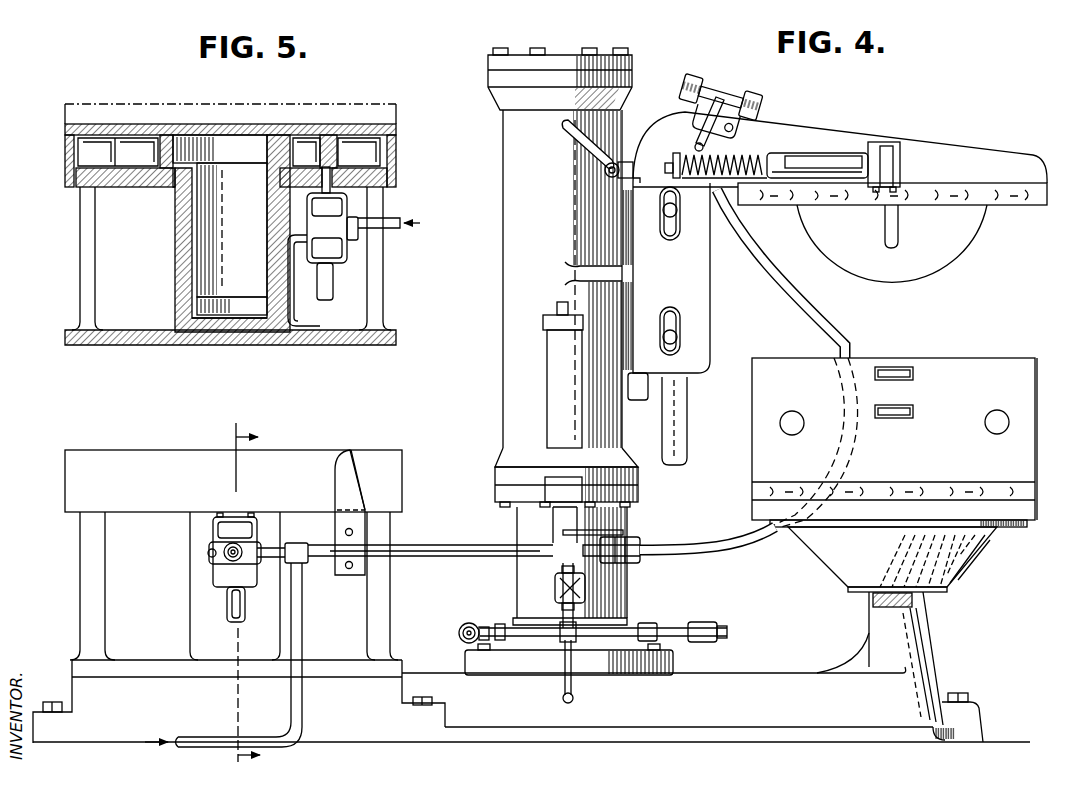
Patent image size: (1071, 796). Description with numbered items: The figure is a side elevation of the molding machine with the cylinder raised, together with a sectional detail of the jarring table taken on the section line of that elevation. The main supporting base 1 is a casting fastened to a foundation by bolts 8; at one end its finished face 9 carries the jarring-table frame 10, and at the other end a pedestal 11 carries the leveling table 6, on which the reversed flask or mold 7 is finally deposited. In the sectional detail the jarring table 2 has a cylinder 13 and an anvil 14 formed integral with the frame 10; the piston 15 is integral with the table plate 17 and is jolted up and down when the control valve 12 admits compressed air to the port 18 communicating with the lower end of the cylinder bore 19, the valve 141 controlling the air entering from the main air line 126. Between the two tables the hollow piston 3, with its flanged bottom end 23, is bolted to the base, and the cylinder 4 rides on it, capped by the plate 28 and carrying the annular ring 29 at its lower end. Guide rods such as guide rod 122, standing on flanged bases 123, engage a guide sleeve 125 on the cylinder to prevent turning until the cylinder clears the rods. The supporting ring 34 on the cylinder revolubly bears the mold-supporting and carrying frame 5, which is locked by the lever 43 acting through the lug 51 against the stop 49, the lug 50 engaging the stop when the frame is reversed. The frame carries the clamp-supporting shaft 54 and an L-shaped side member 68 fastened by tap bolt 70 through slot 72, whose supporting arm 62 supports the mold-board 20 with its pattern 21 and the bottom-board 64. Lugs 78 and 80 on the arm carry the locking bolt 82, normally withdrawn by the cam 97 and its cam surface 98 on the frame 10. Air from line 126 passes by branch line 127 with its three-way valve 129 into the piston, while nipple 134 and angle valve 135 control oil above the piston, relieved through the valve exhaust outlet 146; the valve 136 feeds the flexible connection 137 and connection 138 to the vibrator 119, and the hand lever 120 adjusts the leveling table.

In FIG. 4, the main supporting base 1 is at (712, 714).
In FIG. 5, the jarring table 2 is at (60, 142).
In FIG. 4, the jarring table 2 is at (57, 480).
In FIG. 4, the piston 3 is at (505, 566).
In FIG. 4, the cylinder 4 is at (500, 166).
In FIG. 4, the mold-supporting and carrying frame 5 is at (738, 300).
In FIG. 4, the leveling table 6 is at (985, 560).
In FIG. 4, the flask or mold 7 is at (960, 356).
In FIG. 4, the bolts 8 is at (430, 700).
In FIG. 4, the finished face 9 is at (156, 678).
In FIG. 5, the jarring-table frame 10 is at (82, 249).
In FIG. 4, the jarring-table frame 10 is at (92, 573).
In FIG. 4, the pedestal 11 is at (925, 625).
In FIG. 5, the control valve 12 is at (352, 207).
In FIG. 4, the control valve 12 is at (210, 578).
In FIG. 5, the cylinder 13 is at (175, 237).
In FIG. 5, the anvil 14 is at (172, 186).
In FIG. 5, the piston 15 is at (268, 226).
In FIG. 5, the table plate 17 is at (297, 124).
In FIG. 4, the table plate 17 is at (113, 450).
In FIG. 5, the port 18 is at (297, 306).
In FIG. 5, the cylinder bore 19 is at (236, 333).
In FIG. 4, the mold-board 20 is at (1018, 207).
In FIG. 4, the pattern 21 is at (938, 249).
In FIG. 4, the flanged bottom end 23 is at (465, 660).
In FIG. 4, the plate 28 is at (632, 63).
In FIG. 4, the annular ring 29 is at (640, 491).
In FIG. 4, the supporting ring 34 is at (627, 308).
In FIG. 4, the lever 43 is at (582, 140).
In FIG. 4, the stop 49 is at (629, 160).
In FIG. 4, the lug 50 is at (640, 160).
In FIG. 4, the lug 51 is at (638, 400).
In FIG. 4, the clamp-supporting shaft 54 is at (690, 418).
In FIG. 4, the supporting arm 62 is at (972, 148).
In FIG. 4, the bottom-board 64 is at (1030, 527).
In FIG. 4, the L-shaped side member 68 is at (678, 274).
In FIG. 4, the tap bolt 70 is at (677, 213).
In FIG. 4, the slot 72 is at (673, 197).
In FIG. 4, the lug 78 is at (677, 153).
In FIG. 4, the lug 80 is at (888, 142).
In FIG. 4, the locking bolt 82 is at (805, 142).
In FIG. 4, the cam 97 is at (340, 484).
In FIG. 4, the cam surface 98 is at (357, 460).
In FIG. 4, the vibrator 119 is at (720, 88).
In FIG. 4, the hand lever 120 is at (893, 607).
In FIG. 4, the guide rod 122 is at (555, 527).
In FIG. 4, the flanged base 123 is at (545, 645).
In FIG. 4, the guide sleeve 125 is at (558, 383).
In FIG. 4, the main air line 126 is at (430, 547).
In FIG. 4, the branch line 127 is at (575, 685).
In FIG. 4, the three-way valve 129 is at (590, 590).
In FIG. 4, the nipple 134 is at (626, 630).
In FIG. 4, the angle valve 135 is at (467, 624).
In FIG. 4, the valve 136 is at (642, 540).
In FIG. 4, the flexible connection 137 is at (715, 562).
In FIG. 4, the connection 138 is at (712, 143).
In FIG. 4, the valve 141 is at (225, 548).
In FIG. 4, the valve exhaust outlet 146 is at (555, 590).